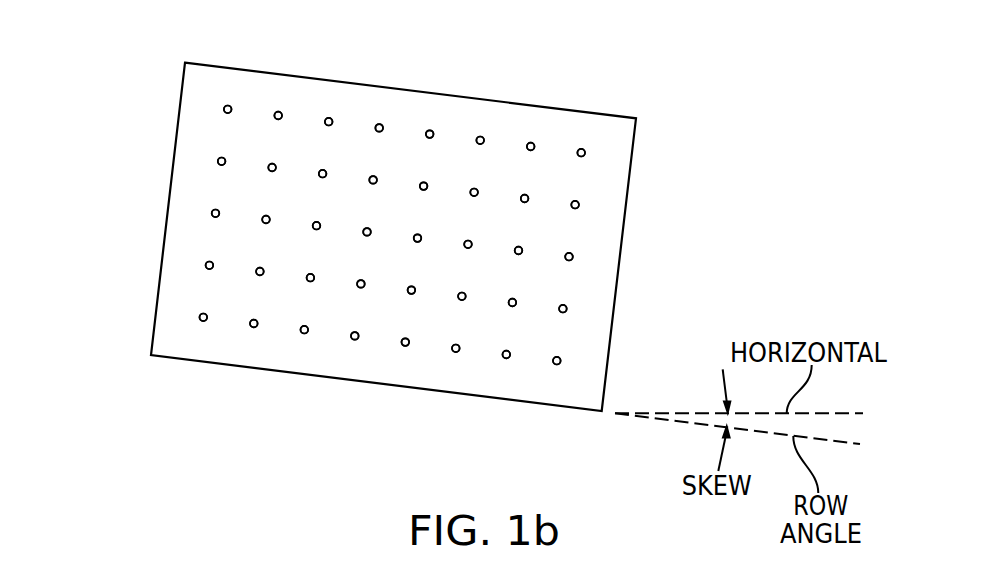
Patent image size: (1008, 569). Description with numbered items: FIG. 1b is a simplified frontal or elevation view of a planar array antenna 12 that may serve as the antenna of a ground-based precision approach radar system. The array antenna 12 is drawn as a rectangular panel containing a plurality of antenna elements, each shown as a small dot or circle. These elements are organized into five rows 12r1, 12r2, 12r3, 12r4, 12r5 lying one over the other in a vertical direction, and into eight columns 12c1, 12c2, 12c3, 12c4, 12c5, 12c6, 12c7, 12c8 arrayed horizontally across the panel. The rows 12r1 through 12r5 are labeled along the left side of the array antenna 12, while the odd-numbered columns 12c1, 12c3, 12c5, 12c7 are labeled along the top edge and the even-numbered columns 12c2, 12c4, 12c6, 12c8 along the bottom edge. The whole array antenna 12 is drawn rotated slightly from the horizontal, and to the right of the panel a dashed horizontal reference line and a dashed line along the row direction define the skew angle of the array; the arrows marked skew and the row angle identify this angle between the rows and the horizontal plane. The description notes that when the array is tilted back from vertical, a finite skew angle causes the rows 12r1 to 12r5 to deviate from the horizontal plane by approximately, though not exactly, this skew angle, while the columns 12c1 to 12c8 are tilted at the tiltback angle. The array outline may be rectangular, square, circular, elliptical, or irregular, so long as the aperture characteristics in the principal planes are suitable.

The array antenna 12 is at (257, 485).
The column 12c1 is at (237, 69).
The column 12c2 is at (247, 367).
The column 12c3 is at (337, 81).
The column 12c4 is at (349, 380).
The column 12c5 is at (438, 94).
The column 12c6 is at (447, 392).
The column 12c7 is at (537, 106).
The column 12c8 is at (552, 405).
The row 12r1 is at (181, 101).
The row 12r2 is at (175, 152).
The row 12r3 is at (168, 205).
The row 12r4 is at (162, 257).
The row 12r5 is at (156, 312).